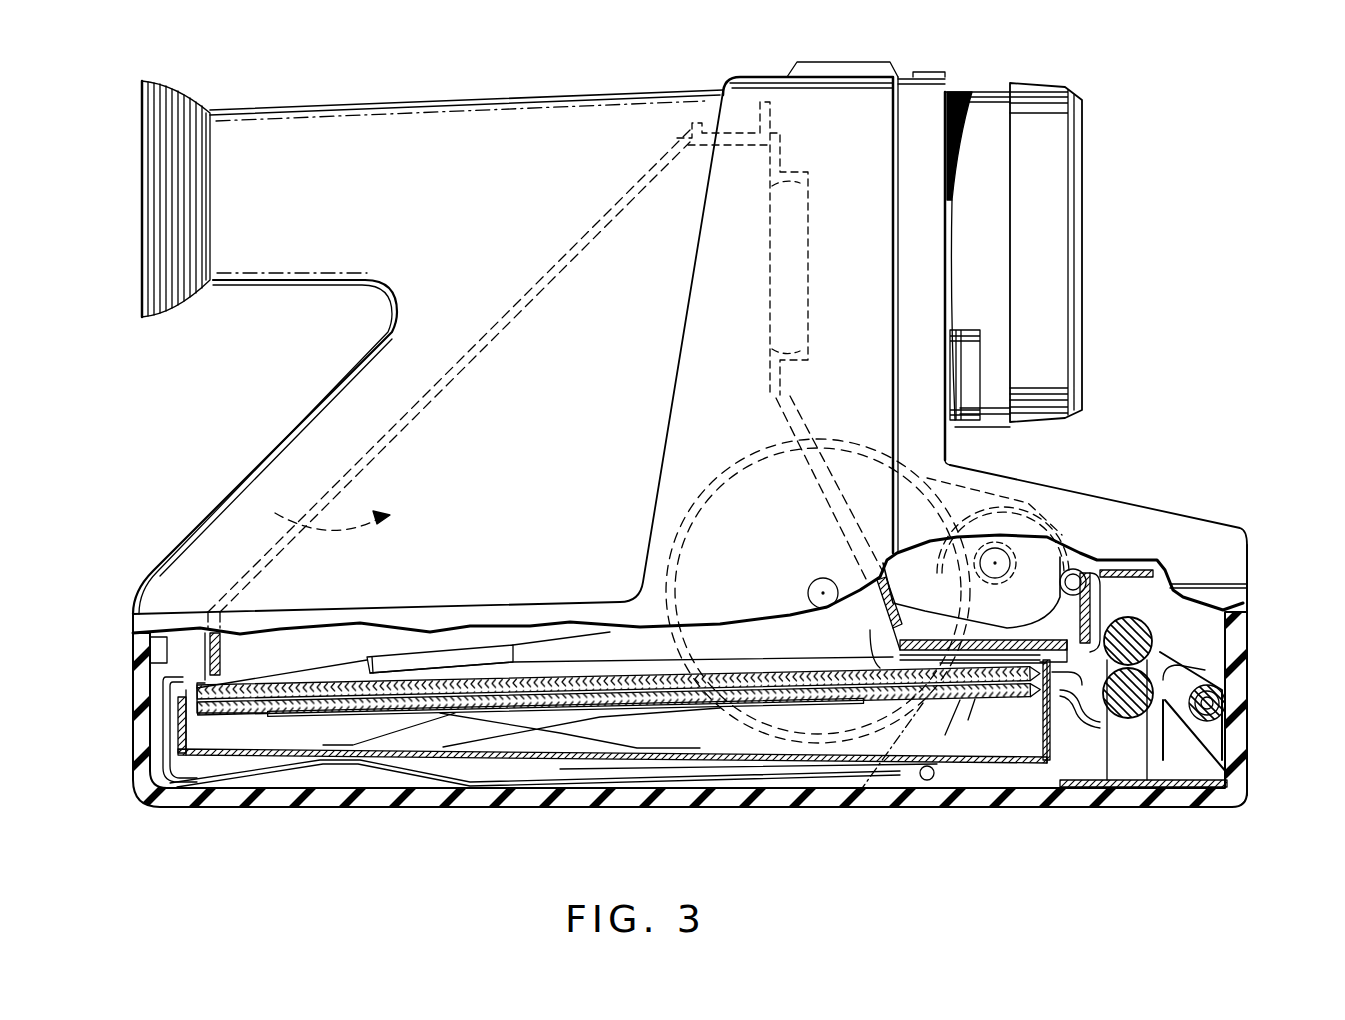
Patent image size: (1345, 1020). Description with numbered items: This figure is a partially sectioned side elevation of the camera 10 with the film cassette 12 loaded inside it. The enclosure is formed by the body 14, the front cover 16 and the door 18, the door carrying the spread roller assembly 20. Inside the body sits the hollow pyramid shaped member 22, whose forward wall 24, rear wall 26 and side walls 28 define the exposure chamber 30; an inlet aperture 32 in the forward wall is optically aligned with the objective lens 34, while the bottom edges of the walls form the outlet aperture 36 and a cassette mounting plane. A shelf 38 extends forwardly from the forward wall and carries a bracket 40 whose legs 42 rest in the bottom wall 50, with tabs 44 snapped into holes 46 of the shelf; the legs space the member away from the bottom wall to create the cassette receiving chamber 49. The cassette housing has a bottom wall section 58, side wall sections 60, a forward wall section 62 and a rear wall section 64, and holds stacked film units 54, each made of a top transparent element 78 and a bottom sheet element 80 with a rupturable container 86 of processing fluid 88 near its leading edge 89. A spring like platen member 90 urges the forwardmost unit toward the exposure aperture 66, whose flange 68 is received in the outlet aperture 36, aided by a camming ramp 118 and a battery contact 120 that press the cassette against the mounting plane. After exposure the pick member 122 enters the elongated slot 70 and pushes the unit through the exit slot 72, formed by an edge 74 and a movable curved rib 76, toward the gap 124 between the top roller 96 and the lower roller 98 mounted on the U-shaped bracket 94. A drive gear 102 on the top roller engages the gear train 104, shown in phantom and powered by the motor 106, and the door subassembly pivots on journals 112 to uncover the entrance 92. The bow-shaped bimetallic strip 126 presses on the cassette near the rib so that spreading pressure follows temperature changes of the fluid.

The camera 10 is at (879, 50).
The film cassette 12 is at (512, 778).
The body 14 is at (290, 423).
The front cover 16 is at (1110, 492).
The door 18 is at (1262, 599).
The spread roller assembly 20 is at (1163, 775).
The hollow generally pyramid shaped member 22 is at (468, 333).
The forward wall 24 is at (788, 400).
The rear wall 26 is at (447, 384).
The side walls 28 is at (616, 652).
The exposure chamber 30 is at (320, 513).
The inlet aperture 32 is at (742, 248).
The photographic objective lens 34 is at (1098, 178).
The outlet aperture 36 is at (222, 675).
The shelf 38 is at (952, 648).
The bracket 40 is at (1104, 700).
The legs 42 is at (915, 730).
The tabs 44 is at (905, 641).
The holes 46 is at (888, 632).
The cassette receiving chamber 49 is at (190, 770).
The bottom wall 50 is at (727, 794).
The film units 54 is at (247, 718).
The bottom wall section 58 is at (308, 750).
The side wall sections 60 is at (376, 740).
The forward wall section 62 is at (1047, 737).
The rear wall section 64 is at (187, 722).
The exposure aperture 66 is at (857, 642).
The flange 68 is at (786, 657).
The elongated slot 70 is at (180, 688).
The exit slot 72 is at (1082, 712).
The edge 74 is at (1082, 724).
The curved rib 76 is at (1047, 620).
The top transparent element 78 is at (641, 677).
The bottom sheet element 80 is at (700, 677).
The rupturable container 86 is at (949, 717).
The processing fluid 88 is at (973, 709).
The leading edge 89 is at (1040, 700).
The spring like platen member 90 is at (693, 707).
The entrance 92 is at (1062, 760).
The U-shaped bracket 94 is at (1190, 718).
The top roller 96 is at (1140, 625).
The roller 98 is at (1127, 720).
The drive gear 102 is at (1160, 576).
The gear train 104 is at (955, 458).
The motor 106 is at (1028, 503).
The journals 112 is at (923, 782).
The camming ramps 118 is at (817, 775).
The battery contacts 120 is at (277, 772).
The pick member 122 is at (513, 645).
The gap 124 is at (1080, 674).
The bimetallic strip 126 is at (997, 640).